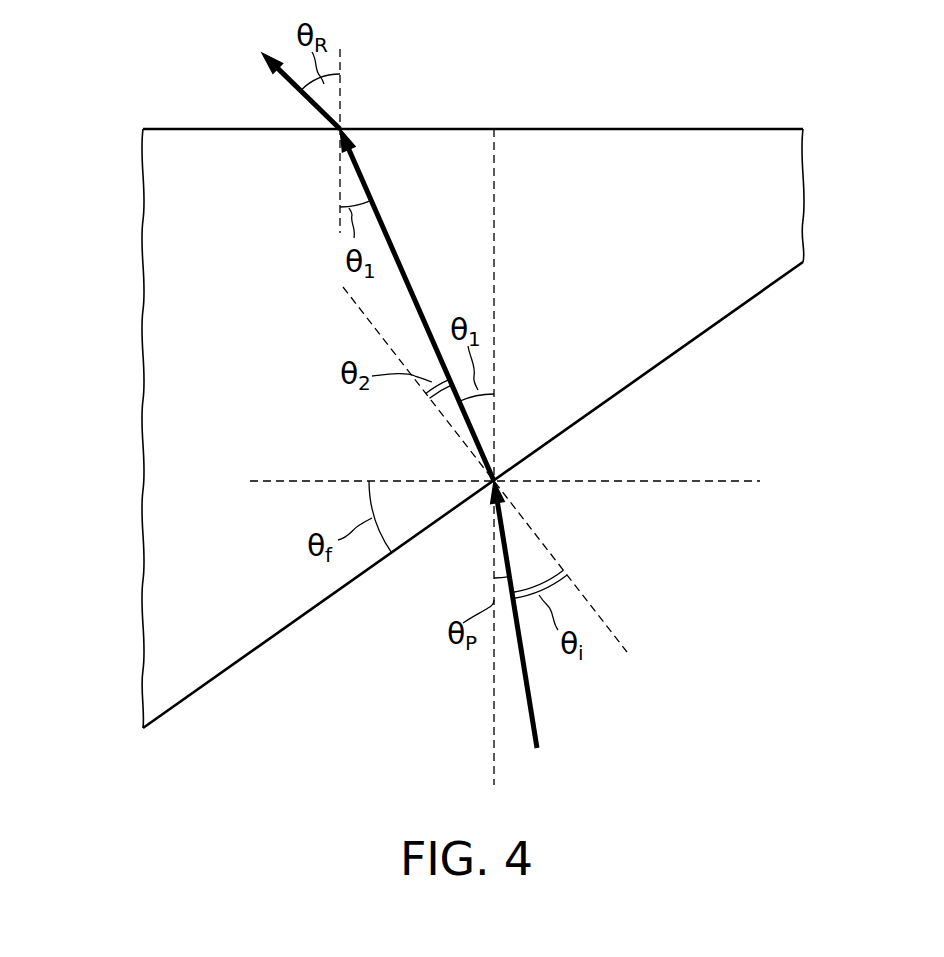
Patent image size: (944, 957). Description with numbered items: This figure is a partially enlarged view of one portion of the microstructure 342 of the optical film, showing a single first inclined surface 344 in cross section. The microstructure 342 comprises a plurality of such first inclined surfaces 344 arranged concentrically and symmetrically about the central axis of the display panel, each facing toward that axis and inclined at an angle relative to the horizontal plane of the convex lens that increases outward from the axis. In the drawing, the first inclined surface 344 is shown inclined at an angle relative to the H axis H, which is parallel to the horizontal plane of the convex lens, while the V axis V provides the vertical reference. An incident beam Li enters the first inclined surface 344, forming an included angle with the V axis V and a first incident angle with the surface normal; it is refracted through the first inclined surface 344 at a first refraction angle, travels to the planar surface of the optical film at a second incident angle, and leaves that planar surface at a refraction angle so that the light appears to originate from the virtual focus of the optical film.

The microstructure 342 is at (163, 611).
The first inclined surface 344 is at (740, 306).
The V axis V is at (494, 155).
The H axis H is at (735, 482).
The incident beam Li is at (538, 748).